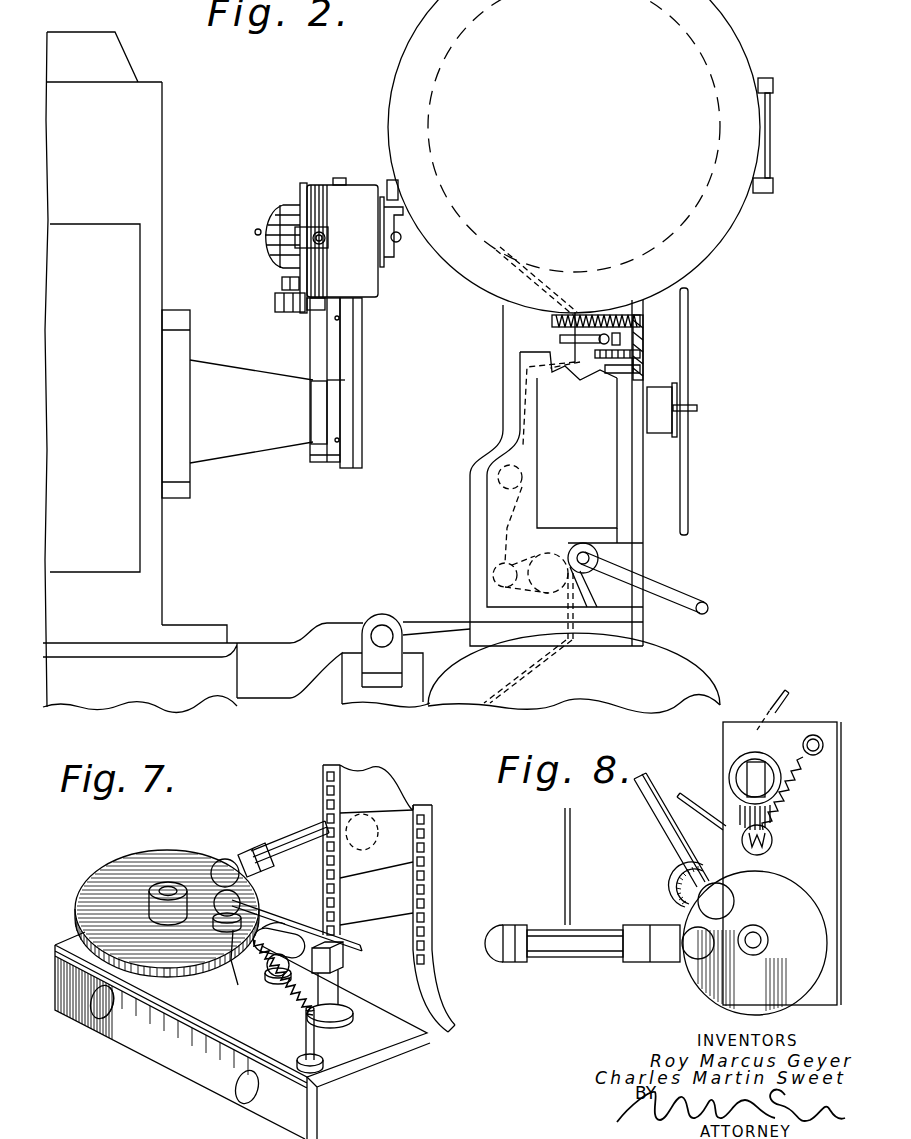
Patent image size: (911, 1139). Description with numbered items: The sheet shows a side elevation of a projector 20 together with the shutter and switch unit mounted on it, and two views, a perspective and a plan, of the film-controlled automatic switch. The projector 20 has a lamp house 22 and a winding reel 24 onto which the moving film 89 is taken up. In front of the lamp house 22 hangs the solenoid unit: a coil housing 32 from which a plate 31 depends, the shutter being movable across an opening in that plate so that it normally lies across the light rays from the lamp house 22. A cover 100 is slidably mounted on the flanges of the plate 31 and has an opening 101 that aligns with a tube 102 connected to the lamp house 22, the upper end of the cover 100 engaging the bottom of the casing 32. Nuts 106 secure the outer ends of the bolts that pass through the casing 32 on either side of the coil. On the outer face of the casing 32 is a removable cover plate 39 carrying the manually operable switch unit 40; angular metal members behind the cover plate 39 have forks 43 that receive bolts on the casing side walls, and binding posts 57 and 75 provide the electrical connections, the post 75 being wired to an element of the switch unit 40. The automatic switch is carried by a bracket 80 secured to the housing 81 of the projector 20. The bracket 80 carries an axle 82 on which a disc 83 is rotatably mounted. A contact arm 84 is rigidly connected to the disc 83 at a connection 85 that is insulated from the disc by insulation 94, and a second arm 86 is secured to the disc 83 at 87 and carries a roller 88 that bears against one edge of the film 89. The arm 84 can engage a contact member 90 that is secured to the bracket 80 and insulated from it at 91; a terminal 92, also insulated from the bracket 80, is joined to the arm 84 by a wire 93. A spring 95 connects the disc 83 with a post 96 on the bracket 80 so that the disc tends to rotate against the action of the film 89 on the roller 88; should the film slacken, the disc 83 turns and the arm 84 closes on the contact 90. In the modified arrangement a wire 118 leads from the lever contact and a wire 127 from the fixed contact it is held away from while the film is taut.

In FIG. 2, the projector 20 is at (547, 433).
In FIG. 2, the lamp house 22 is at (140, 154).
In FIG. 2, the winding reel 24 is at (663, 672).
In FIG. 2, the plate 31 is at (362, 403).
In FIG. 2, the coil housing 32 is at (378, 293).
In FIG. 2, the cover plate 39 is at (303, 192).
In FIG. 2, the manually operable switch unit 40 is at (278, 213).
In FIG. 2, the forks 43 is at (314, 250).
In FIG. 2, the binding post 57 is at (277, 303).
In FIG. 2, the binding post 75 is at (286, 284).
In FIG. 2, the bracket 80 is at (627, 374).
In FIG. 7, the bracket 80 is at (212, 1074).
In FIG. 8, the bracket 80 is at (808, 726).
In FIG. 2, the housing 81 is at (647, 322).
In FIG. 7, the axle 82 is at (168, 882).
In FIG. 8, the axle 82 is at (757, 943).
In FIG. 2, the disc 83 is at (625, 353).
In FIG. 7, the disc 83 is at (135, 863).
In FIG. 8, the disc 83 is at (781, 896).
In FIG. 7, the contact arm 84 is at (262, 917).
In FIG. 8, the contact arm 84 is at (644, 778).
In FIG. 7, the connection 85 is at (222, 925).
In FIG. 8, the connection 85 is at (698, 906).
In FIG. 7, the second arm 86 is at (260, 855).
In FIG. 8, the second arm 86 is at (665, 925).
In FIG. 7, the securing point 87 is at (226, 859).
In FIG. 8, the securing point 87 is at (687, 954).
In FIG. 2, the roller 88 is at (578, 350).
In FIG. 7, the roller 88 is at (293, 850).
In FIG. 8, the roller 88 is at (587, 937).
In FIG. 2, the moving film 89 is at (500, 538).
In FIG. 7, the moving film 89 is at (416, 813).
In FIG. 8, the moving film 89 is at (565, 821).
In FIG. 7, the contact member 90 is at (345, 959).
In FIG. 8, the contact member 90 is at (756, 773).
In FIG. 7, the insulation 91 is at (360, 1034).
In FIG. 7, the terminal 92 is at (279, 955).
In FIG. 8, the terminal 92 is at (743, 843).
In FIG. 7, the wire 93 is at (283, 924).
In FIG. 8, the wire 93 is at (680, 886).
In FIG. 7, the insulation 94 is at (232, 960).
In FIG. 7, the spring 95 is at (296, 997).
In FIG. 8, the spring 95 is at (797, 793).
In FIG. 7, the post 96 is at (348, 1064).
In FIG. 2, the cover 100 is at (320, 355).
In FIG. 2, the opening 101 is at (327, 381).
In FIG. 2, the tube 102 is at (240, 445).
In FIG. 2, the nuts 106 is at (338, 181).
In FIG. 8, the wire 118 is at (683, 802).
In FIG. 8, the wire 127 is at (800, 673).